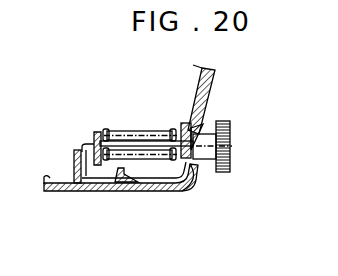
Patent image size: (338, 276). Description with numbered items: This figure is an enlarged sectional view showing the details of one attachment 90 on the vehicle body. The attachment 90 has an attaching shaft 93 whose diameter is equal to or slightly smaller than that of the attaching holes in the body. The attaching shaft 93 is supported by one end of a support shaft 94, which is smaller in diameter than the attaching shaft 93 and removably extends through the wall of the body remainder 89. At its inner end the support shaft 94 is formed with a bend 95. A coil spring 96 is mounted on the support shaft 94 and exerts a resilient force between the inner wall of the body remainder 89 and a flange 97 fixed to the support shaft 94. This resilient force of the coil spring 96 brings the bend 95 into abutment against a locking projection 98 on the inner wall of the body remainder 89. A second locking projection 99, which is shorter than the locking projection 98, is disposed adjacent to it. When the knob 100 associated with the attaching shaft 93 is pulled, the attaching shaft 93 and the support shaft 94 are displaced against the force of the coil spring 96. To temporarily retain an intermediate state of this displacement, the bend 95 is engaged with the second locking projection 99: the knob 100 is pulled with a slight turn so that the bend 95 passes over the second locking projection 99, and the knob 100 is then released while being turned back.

The body remainder 89 is at (215, 82).
The attachment 90 is at (235, 181).
The attaching shaft 93 is at (200, 165).
The support shaft 94 is at (145, 145).
The bend 95 is at (80, 150).
The coil spring 96 is at (110, 131).
The flange 97 is at (95, 143).
The locking projection 98 is at (72, 183).
The second locking projection 99 is at (136, 183).
The knob 100 is at (232, 150).